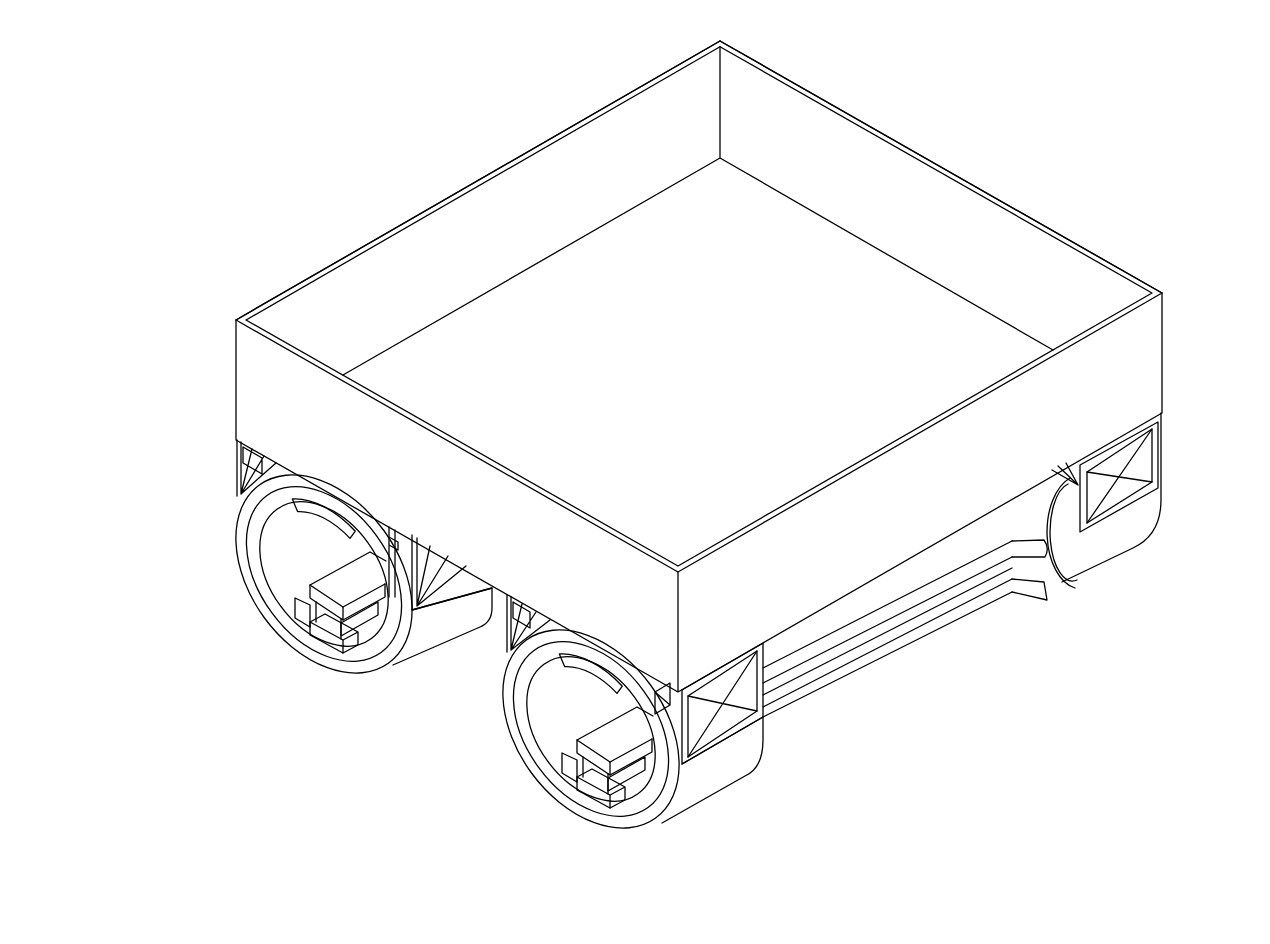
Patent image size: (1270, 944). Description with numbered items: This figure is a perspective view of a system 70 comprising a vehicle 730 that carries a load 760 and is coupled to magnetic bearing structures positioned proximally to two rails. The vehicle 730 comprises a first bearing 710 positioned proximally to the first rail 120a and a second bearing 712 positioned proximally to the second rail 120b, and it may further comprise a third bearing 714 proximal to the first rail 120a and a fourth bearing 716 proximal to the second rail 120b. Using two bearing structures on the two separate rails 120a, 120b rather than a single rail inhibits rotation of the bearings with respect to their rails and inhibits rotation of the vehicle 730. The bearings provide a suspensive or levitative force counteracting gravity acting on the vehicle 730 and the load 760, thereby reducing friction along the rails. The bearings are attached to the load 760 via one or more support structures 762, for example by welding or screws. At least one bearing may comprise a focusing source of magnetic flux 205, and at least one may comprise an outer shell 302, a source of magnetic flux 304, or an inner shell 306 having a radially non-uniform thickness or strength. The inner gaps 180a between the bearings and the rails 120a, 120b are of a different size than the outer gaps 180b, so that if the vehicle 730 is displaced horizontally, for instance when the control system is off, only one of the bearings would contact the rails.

The system 70 is at (296, 182).
The vehicle 730 is at (505, 160).
The fourth bearing 716 is at (440, 180).
The load 760 is at (940, 165).
The support structure 762 is at (1164, 457).
The second bearing 712 is at (427, 647).
The first bearing 710 is at (737, 782).
The third bearing 714 is at (1102, 571).
The outer shell 302 is at (655, 800).
The source of magnetic flux 304 is at (660, 775).
The inner shell 306 is at (735, 782).
The focusing source of magnetic flux 205 is at (330, 508).
The first rail 120a is at (590, 798).
The second rail 120b is at (320, 637).
The inner gap 180a is at (334, 668).
The outer gap 180b is at (310, 650).